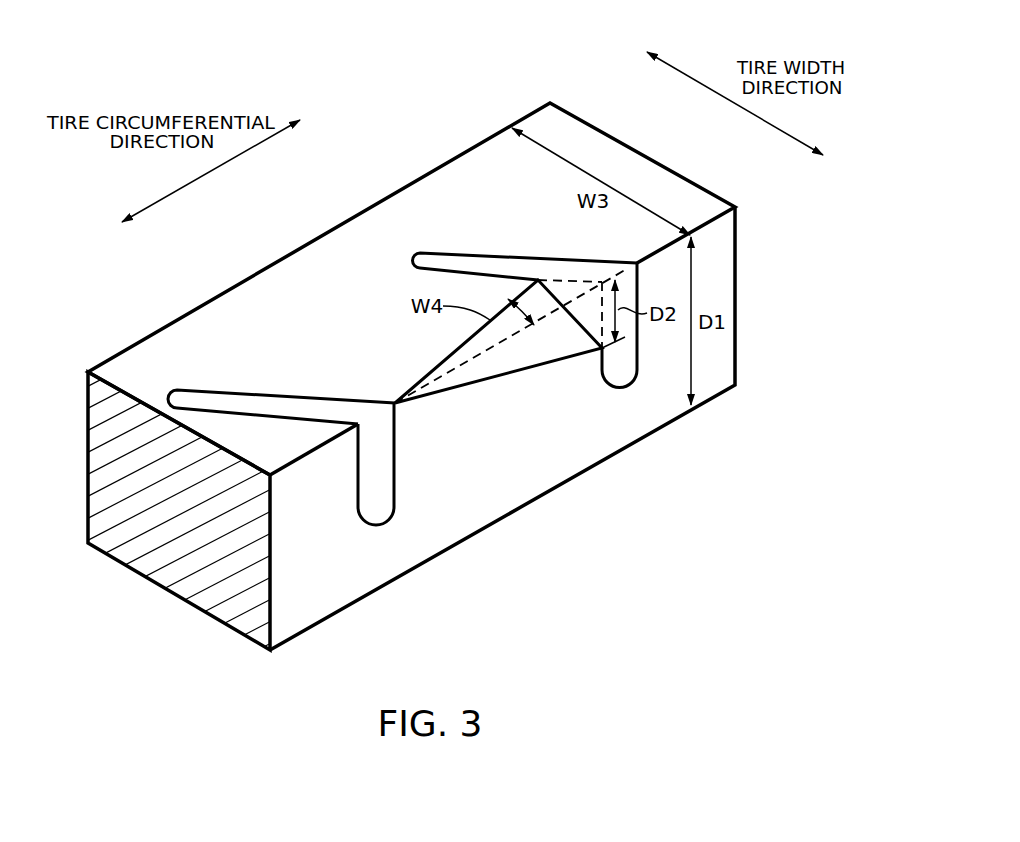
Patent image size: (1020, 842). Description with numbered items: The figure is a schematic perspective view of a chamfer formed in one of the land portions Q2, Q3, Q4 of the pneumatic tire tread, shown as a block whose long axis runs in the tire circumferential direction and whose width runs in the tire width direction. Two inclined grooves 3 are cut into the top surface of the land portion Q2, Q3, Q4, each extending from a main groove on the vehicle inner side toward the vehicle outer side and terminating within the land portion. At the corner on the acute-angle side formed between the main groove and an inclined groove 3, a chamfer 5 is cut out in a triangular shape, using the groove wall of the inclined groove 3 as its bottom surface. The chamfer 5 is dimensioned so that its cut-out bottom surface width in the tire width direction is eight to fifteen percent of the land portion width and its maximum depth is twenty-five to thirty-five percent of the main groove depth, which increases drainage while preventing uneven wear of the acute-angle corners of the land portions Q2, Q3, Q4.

The inclined groove 3 is at (384, 509).
The chamfer 5 is at (508, 362).
The land portion Q2 is at (152, 357).
The land portion Q3 is at (180, 514).
The land portion Q4 is at (502, 428).